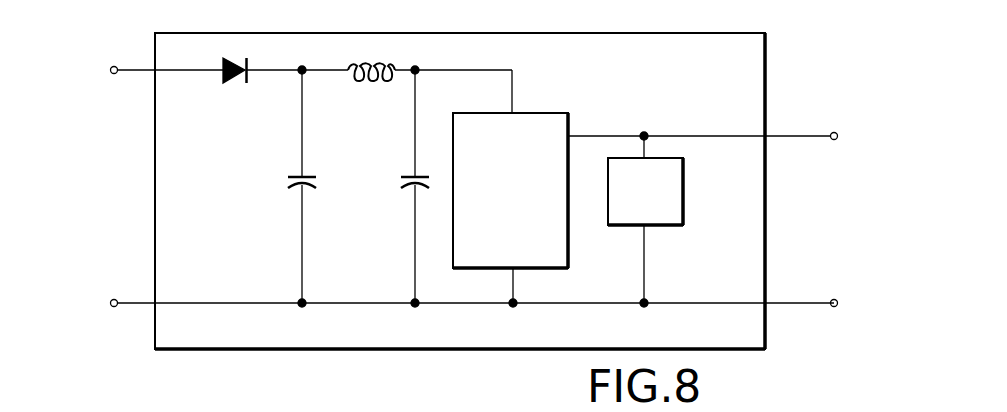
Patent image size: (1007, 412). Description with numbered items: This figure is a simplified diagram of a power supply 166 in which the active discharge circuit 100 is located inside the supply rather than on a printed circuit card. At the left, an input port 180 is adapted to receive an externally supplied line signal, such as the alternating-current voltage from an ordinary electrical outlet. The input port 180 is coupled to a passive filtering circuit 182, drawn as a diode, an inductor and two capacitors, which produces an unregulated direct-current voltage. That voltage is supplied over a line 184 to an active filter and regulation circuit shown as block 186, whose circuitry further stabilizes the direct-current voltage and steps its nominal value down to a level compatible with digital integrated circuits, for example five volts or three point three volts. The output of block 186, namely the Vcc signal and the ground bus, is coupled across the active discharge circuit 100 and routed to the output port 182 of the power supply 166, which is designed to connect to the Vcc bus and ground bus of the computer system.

The active discharge circuit 100 is at (661, 202).
The power supply 166 is at (724, 86).
The input port 180 is at (116, 124).
The passive filtering circuit 182 is at (331, 336).
The supply line node 184 is at (514, 69).
The active filter and regulation circuit 186 is at (536, 247).